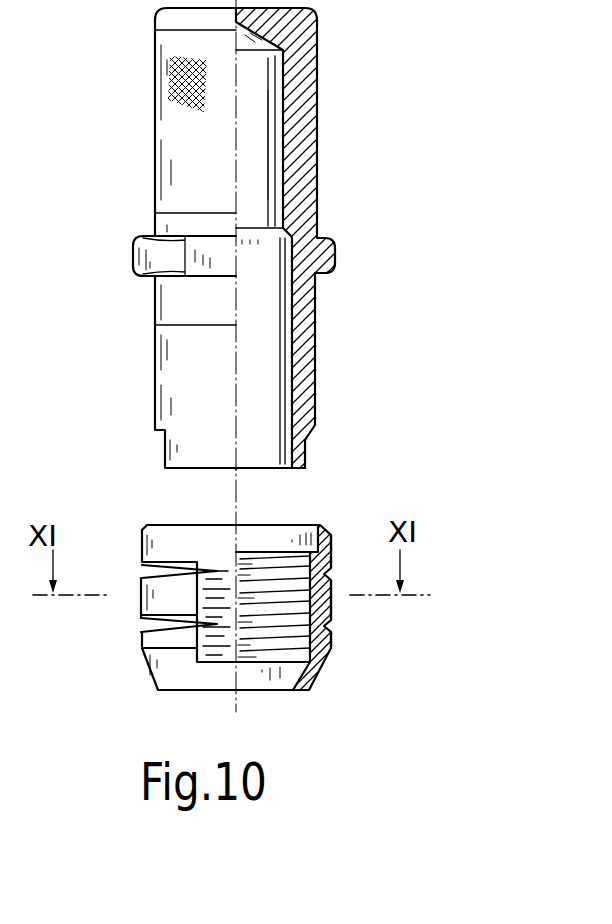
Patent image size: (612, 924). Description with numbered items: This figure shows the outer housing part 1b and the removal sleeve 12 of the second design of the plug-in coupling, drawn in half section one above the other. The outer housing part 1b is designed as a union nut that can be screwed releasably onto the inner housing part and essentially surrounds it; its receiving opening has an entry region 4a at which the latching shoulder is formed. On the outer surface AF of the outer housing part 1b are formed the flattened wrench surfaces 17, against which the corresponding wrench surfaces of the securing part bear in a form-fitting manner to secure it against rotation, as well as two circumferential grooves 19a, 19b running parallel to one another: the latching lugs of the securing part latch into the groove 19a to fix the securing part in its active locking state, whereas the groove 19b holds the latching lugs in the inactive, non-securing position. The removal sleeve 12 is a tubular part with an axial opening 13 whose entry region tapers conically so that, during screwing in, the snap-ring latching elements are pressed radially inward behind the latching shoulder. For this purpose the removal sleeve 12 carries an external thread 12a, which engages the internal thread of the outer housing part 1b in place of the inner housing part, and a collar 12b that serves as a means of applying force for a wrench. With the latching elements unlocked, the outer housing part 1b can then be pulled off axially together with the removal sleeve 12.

The removal sleeve 12 is at (177, 156).
The external thread 12a is at (155, 386).
The collar 12b is at (143, 258).
The axial opening 13 is at (267, 432).
The outer housing part 1b is at (150, 541).
The outer surface AF is at (337, 548).
The groove 19a is at (143, 622).
The groove 19b is at (143, 572).
The wrench surface 17 is at (190, 653).
The entry region 4a is at (278, 694).